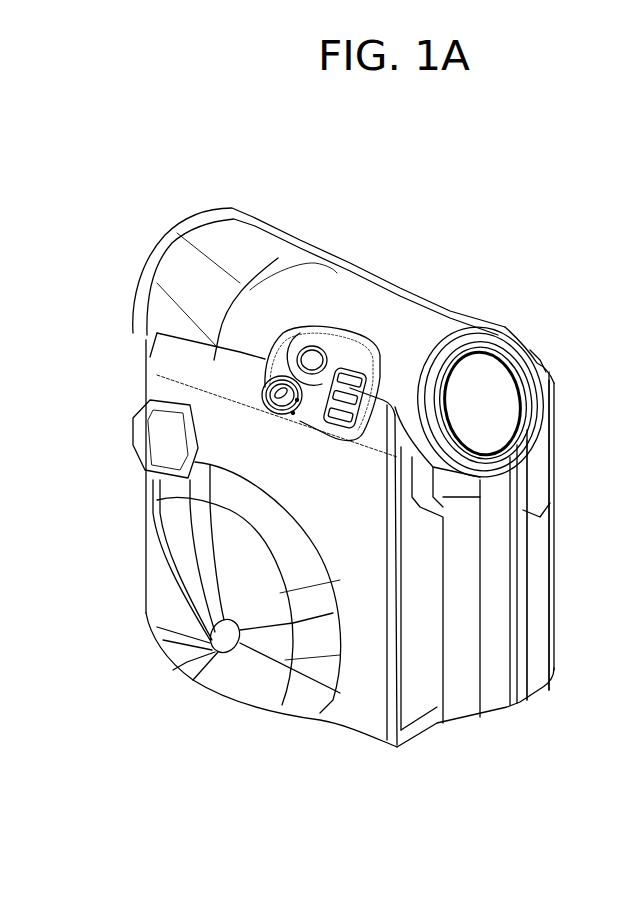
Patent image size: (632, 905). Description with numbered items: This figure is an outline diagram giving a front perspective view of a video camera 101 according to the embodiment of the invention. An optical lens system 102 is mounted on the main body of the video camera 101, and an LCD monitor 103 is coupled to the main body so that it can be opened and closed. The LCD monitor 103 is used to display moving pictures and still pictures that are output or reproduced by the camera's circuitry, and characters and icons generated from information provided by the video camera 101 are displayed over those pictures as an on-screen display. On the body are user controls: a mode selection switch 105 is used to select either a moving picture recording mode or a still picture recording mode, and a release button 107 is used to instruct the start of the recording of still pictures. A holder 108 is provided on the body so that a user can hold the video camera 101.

The video camera 101 is at (555, 226).
The optical lens system 102 is at (500, 398).
The LCD monitor 103 is at (579, 540).
The mode selection switch 105 is at (280, 378).
The release button 107 is at (316, 365).
The holder 108 is at (170, 612).